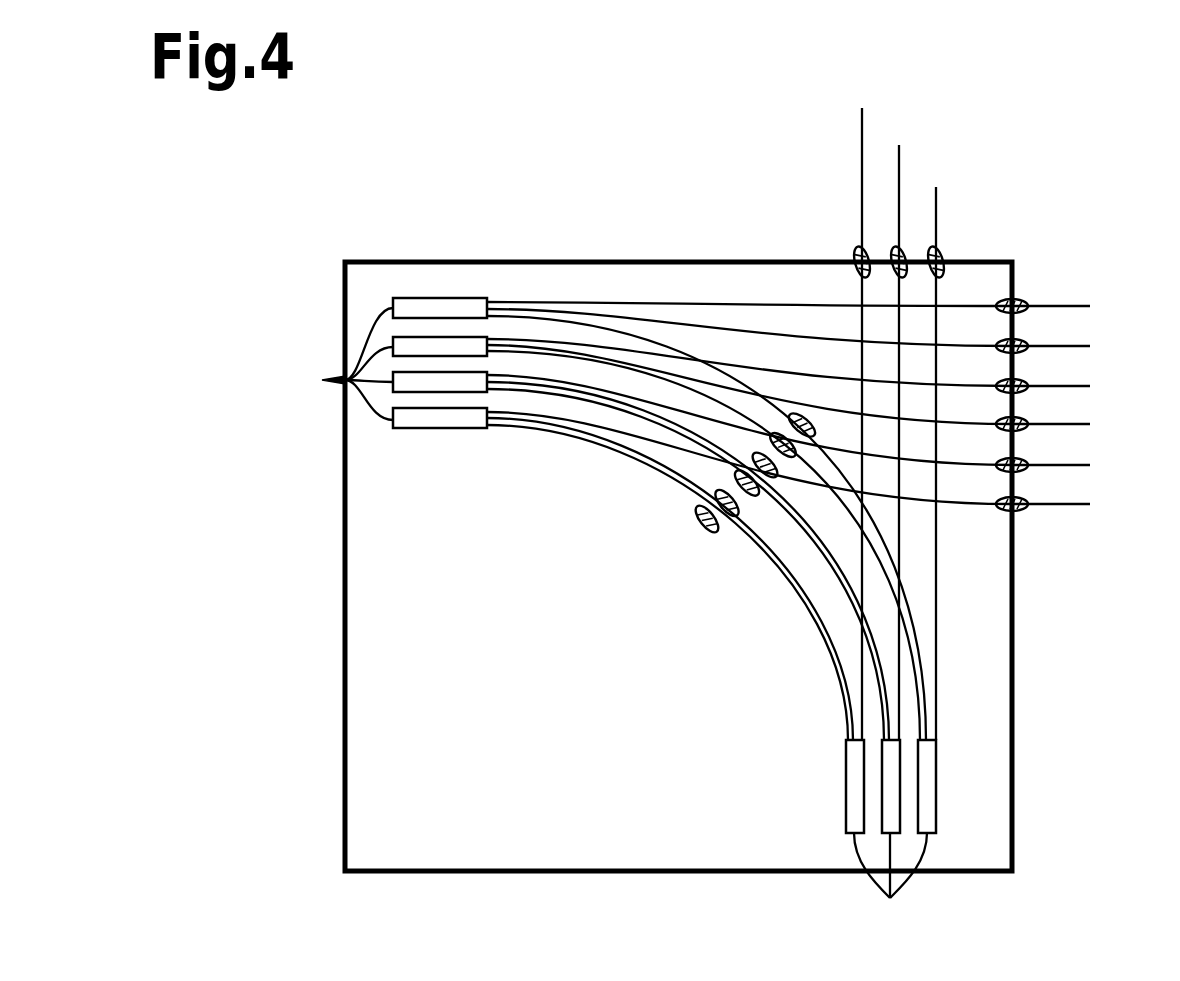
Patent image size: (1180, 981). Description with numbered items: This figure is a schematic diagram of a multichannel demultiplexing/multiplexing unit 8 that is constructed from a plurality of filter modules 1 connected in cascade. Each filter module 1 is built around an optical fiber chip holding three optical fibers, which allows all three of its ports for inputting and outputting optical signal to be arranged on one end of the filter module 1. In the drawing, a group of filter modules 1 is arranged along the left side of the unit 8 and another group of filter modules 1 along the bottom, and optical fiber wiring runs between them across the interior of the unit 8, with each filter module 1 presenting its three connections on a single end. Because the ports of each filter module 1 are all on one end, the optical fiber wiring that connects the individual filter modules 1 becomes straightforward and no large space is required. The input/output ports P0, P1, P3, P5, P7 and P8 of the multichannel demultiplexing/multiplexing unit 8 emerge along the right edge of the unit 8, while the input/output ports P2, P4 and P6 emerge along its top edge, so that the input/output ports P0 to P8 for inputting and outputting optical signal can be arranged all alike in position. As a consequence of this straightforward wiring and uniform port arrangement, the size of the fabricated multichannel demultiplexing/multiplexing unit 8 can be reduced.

The filter module 1 is at (650, 621).
The multichannel demultiplexing/multiplexing unit 8 is at (345, 638).
The input/output port P0 is at (1073, 307).
The input/output port P1 is at (1073, 346).
The input/output port P2 is at (936, 446).
The input/output port P3 is at (1073, 387).
The input/output port P4 is at (898, 425).
The input/output port P5 is at (1073, 425).
The input/output port P6 is at (863, 405).
The input/output port P7 is at (1073, 465).
The input/output port P8 is at (1073, 504).